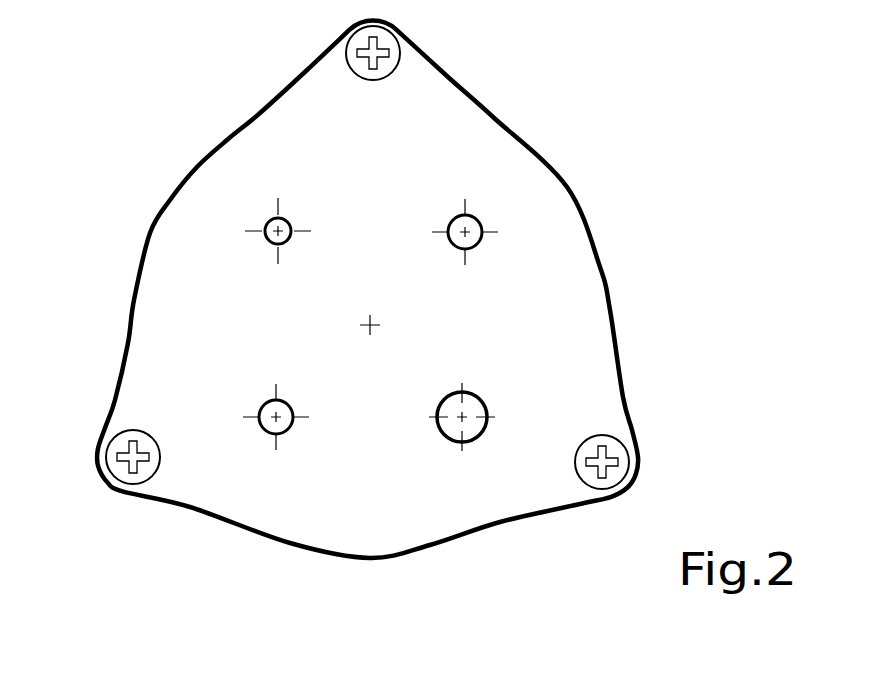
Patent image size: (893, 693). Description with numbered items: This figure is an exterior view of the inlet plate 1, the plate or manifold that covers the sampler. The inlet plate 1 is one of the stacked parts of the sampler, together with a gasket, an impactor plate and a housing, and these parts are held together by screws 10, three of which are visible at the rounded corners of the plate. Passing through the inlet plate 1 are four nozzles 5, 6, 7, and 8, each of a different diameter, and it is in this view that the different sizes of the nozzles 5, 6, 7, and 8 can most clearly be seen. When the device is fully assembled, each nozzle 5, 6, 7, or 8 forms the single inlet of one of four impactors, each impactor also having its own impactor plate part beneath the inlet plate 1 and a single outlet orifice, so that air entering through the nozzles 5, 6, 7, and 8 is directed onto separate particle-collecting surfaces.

The inlet plate 1 is at (601, 319).
The nozzle 5 is at (478, 216).
The nozzle 6 is at (267, 224).
The nozzle 7 is at (458, 444).
The nozzle 8 is at (258, 413).
The screws 10 is at (385, 44).